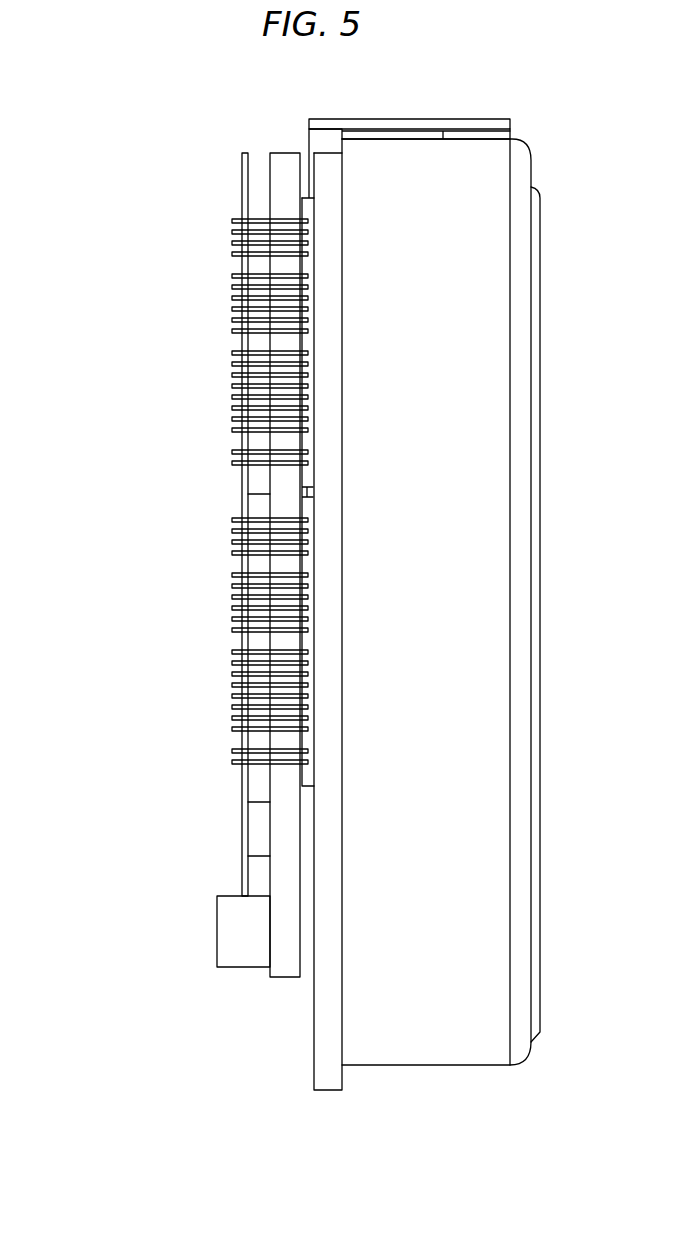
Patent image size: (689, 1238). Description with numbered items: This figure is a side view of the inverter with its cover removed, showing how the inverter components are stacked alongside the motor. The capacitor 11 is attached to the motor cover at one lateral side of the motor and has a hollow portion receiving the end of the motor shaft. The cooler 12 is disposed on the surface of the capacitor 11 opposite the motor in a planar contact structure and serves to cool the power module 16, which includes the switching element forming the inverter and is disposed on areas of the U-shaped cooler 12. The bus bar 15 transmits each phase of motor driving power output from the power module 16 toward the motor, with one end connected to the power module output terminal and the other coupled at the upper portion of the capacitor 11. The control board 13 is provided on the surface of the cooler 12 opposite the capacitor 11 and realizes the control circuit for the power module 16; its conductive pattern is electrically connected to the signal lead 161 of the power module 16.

The capacitor 11 is at (393, 600).
The cooler 12 is at (231, 945).
The control board 13 is at (242, 869).
The bus bar 15 is at (317, 145).
The power module 16 is at (307, 776).
The signal lead 161 is at (260, 555).